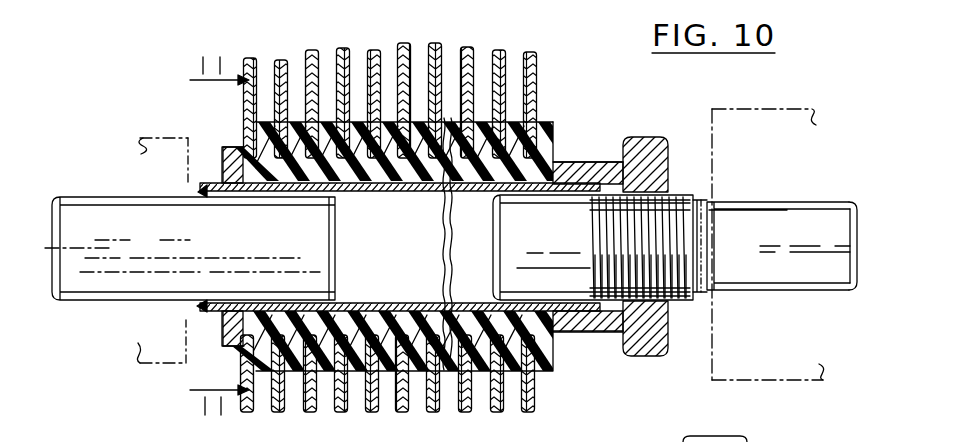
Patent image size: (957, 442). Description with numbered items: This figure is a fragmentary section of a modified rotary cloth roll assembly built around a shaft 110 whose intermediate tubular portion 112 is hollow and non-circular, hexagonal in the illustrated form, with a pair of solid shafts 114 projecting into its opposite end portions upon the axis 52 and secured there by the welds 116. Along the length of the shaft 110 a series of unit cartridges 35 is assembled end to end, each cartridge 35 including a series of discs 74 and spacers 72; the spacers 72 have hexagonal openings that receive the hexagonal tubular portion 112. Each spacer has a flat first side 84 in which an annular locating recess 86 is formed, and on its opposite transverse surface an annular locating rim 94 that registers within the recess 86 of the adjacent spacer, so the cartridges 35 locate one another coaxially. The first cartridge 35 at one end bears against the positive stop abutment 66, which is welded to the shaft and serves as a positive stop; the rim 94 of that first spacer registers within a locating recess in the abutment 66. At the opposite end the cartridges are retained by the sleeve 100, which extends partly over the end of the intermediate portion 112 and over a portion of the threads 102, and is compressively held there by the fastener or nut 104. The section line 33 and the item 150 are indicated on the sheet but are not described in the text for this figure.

The discs 74 is at (244, 60).
The replaceable cartridges 35 is at (545, 38).
The section line 33 is at (164, 138).
The positive stop abutment 66 is at (232, 148).
The welds 116 is at (200, 191).
The unit spacers 72 is at (276, 192).
The annular locating recess 86 is at (344, 194).
The annular locating rim 94 is at (391, 196).
The first side 84 is at (553, 124).
The sleeve 100 is at (584, 160).
The threads 102 is at (675, 192).
The fastener or nut 104 is at (650, 355).
The solid shafts 114 is at (773, 201).
The shaft 110 is at (200, 310).
The intermediate tubular portion 112 is at (222, 342).
The axis 52 is at (866, 243).
The connector body 150 is at (754, 436).